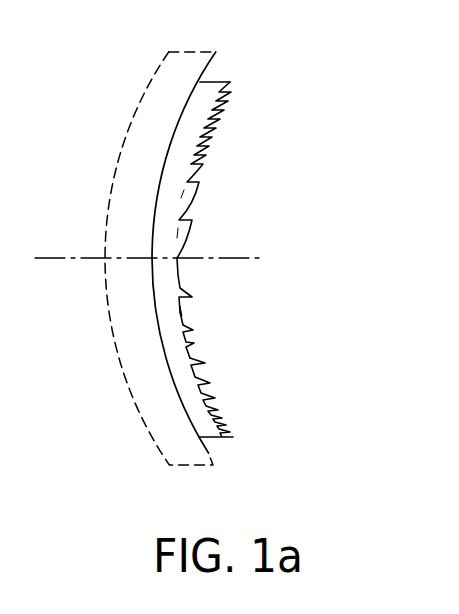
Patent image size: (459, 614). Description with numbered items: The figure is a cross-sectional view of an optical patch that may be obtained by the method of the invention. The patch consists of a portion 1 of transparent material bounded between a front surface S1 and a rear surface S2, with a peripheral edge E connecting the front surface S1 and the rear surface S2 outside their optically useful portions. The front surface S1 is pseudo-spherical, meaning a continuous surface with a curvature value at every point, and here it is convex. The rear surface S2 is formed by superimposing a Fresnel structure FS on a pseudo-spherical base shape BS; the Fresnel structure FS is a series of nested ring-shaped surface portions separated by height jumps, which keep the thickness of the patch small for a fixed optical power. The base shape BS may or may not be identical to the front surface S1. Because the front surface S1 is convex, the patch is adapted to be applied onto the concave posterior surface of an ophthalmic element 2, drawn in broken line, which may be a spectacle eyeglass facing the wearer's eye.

The portion of transparent material 1 is at (227, 262).
The ophthalmic element 2 is at (173, 90).
The peripheral edge E is at (224, 77).
The front surface S1 is at (165, 358).
The rear surface S2 is at (288, 303).
The Fresnel structure FS is at (245, 413).
The base shape BS is at (209, 328).